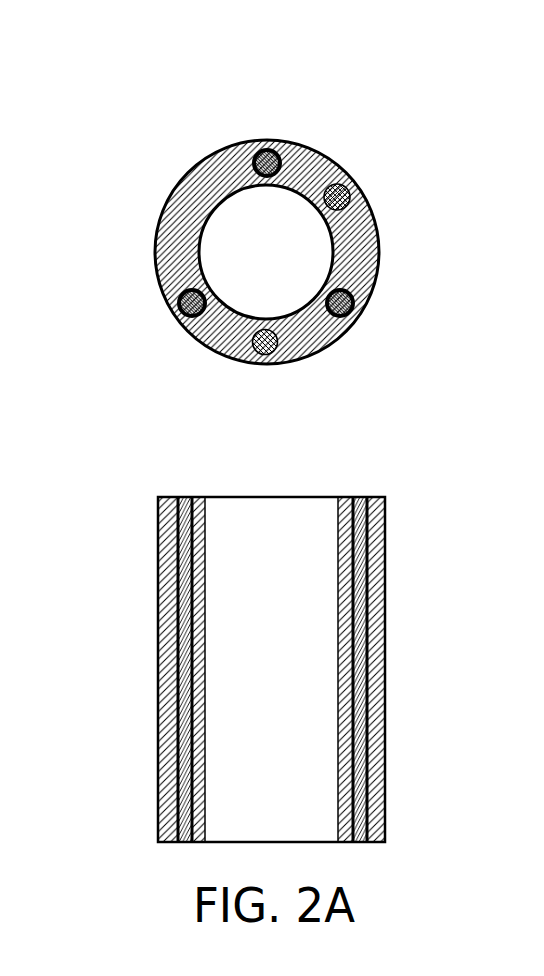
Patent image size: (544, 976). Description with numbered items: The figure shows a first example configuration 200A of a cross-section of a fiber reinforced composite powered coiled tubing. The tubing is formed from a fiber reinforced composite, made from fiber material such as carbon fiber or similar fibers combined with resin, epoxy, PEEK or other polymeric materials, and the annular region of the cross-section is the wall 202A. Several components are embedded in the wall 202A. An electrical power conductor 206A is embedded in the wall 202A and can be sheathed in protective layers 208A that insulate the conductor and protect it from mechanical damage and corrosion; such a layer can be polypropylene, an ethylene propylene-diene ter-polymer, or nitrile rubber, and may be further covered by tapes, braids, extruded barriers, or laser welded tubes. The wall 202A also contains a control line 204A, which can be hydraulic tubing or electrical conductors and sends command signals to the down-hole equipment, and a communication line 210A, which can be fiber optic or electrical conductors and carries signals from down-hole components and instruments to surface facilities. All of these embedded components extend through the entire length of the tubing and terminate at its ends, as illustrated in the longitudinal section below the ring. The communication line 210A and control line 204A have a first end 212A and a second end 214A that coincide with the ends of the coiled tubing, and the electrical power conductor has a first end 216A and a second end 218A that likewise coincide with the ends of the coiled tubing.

The example configuration 200A is at (234, 201).
The wall 202A is at (173, 193).
The control line 204A is at (338, 190).
The electrical power conductor 206A is at (180, 290).
The protective layers 208A is at (180, 316).
The communication line 210A is at (270, 360).
The first end 212A is at (182, 570).
The second end 214A is at (183, 790).
The first end 216A is at (362, 560).
The second end 218A is at (367, 775).